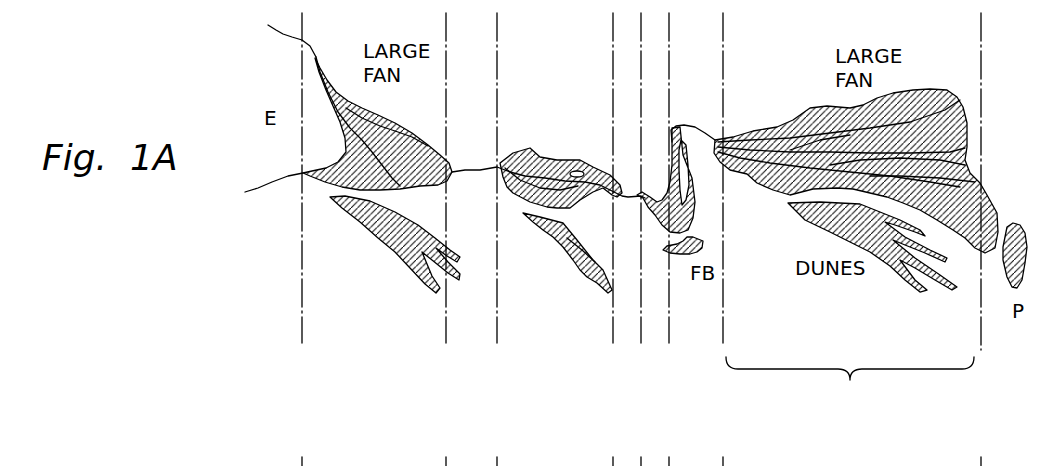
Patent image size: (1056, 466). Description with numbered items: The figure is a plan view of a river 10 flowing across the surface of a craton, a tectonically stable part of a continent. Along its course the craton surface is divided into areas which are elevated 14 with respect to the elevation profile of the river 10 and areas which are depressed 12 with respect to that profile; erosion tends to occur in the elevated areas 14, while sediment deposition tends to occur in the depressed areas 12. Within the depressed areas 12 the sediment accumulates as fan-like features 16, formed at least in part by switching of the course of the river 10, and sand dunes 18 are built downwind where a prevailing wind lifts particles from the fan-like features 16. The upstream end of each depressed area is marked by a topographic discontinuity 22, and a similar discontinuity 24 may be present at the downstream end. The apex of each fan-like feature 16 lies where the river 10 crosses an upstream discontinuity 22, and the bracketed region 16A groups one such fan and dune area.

The river 10 is at (281, 39).
The depressed area 12 is at (397, 127).
The elevated area 14 is at (267, 182).
The fan-like feature 16 is at (319, 194).
The sand dunes 18 is at (393, 265).
The upstream topographic discontinuity 22 is at (302, 328).
The downstream topographic discontinuity 24 is at (446, 328).
The interfan region 16A is at (850, 383).